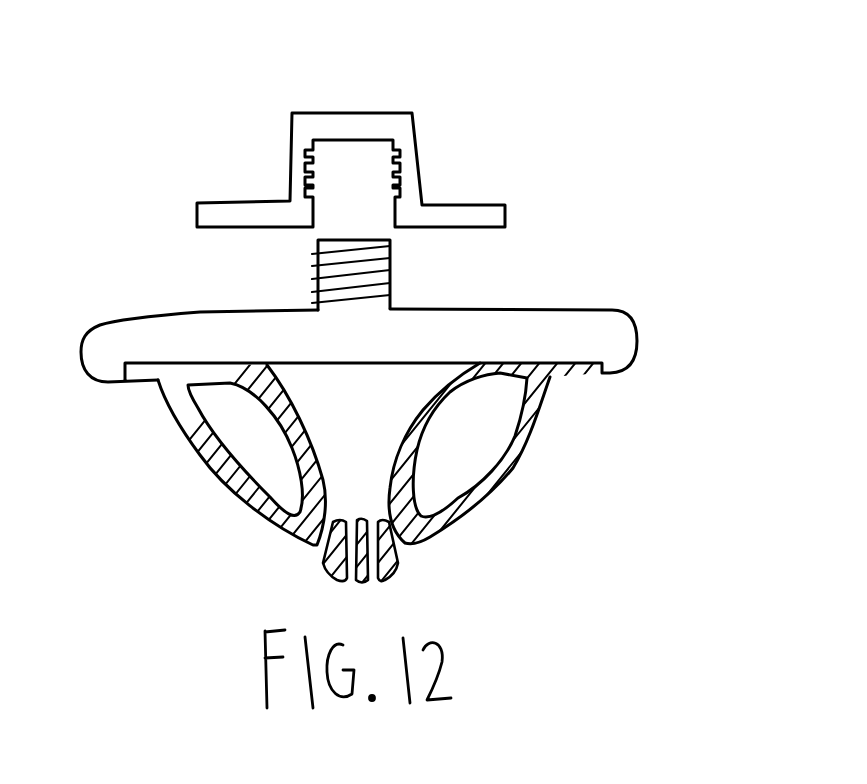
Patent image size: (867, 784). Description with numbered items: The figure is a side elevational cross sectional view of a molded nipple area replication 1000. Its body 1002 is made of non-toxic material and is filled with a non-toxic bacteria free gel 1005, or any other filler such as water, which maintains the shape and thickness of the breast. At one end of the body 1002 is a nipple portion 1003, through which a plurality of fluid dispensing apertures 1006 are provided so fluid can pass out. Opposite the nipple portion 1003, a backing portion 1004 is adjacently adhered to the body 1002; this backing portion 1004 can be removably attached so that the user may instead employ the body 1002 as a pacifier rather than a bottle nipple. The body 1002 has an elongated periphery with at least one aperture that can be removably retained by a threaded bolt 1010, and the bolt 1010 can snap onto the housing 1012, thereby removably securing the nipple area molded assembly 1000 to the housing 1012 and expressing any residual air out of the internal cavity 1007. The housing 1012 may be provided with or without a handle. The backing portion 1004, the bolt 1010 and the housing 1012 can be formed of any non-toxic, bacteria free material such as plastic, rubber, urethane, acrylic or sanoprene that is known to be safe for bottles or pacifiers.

The molded nipple area replication 1000 is at (463, 448).
The body 1002 is at (636, 587).
The nipple portion 1003 is at (153, 613).
The backing portion 1004 is at (775, 380).
The non-toxic bacteria free gel 1005 is at (230, 418).
The fluid dispensing apertures 1006 is at (463, 501).
The internal cavity 1007 is at (417, 388).
The threaded bolt 1010 is at (317, 263).
The housing 1012 is at (367, 113).